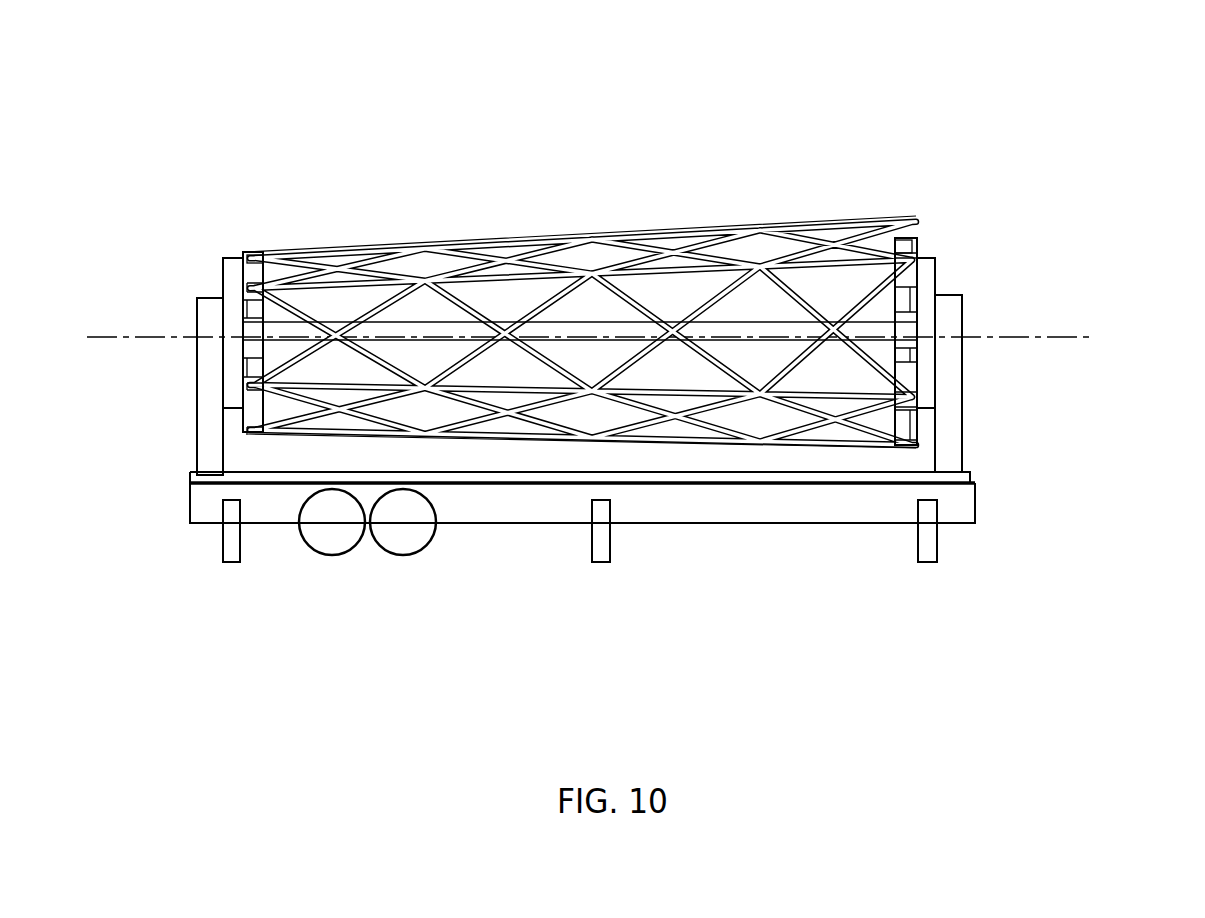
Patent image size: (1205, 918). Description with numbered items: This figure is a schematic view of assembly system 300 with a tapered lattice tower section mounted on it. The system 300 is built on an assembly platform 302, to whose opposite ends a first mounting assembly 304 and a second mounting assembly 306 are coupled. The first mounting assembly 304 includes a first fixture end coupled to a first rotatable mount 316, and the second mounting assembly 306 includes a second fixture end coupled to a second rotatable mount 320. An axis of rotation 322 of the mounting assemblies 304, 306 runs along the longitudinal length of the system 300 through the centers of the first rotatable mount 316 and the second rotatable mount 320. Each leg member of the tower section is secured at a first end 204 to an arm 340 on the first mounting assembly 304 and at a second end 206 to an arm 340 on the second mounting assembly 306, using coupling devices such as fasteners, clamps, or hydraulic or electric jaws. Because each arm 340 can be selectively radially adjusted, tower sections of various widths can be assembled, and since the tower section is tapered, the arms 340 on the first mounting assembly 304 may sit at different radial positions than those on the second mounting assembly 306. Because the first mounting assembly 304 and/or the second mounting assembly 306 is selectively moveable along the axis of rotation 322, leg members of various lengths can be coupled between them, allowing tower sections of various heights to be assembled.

The assembly system 300 is at (810, 82).
The assembly platform 302 is at (960, 478).
The first mounting assembly 304 is at (208, 453).
The second mounting assembly 306 is at (950, 452).
The first rotatable mount 316 is at (230, 288).
The second rotatable mount 320 is at (928, 280).
The axis of rotation 322 is at (1065, 337).
The arm 340 is at (252, 277).
The first end 204 is at (257, 392).
The second end 206 is at (908, 402).